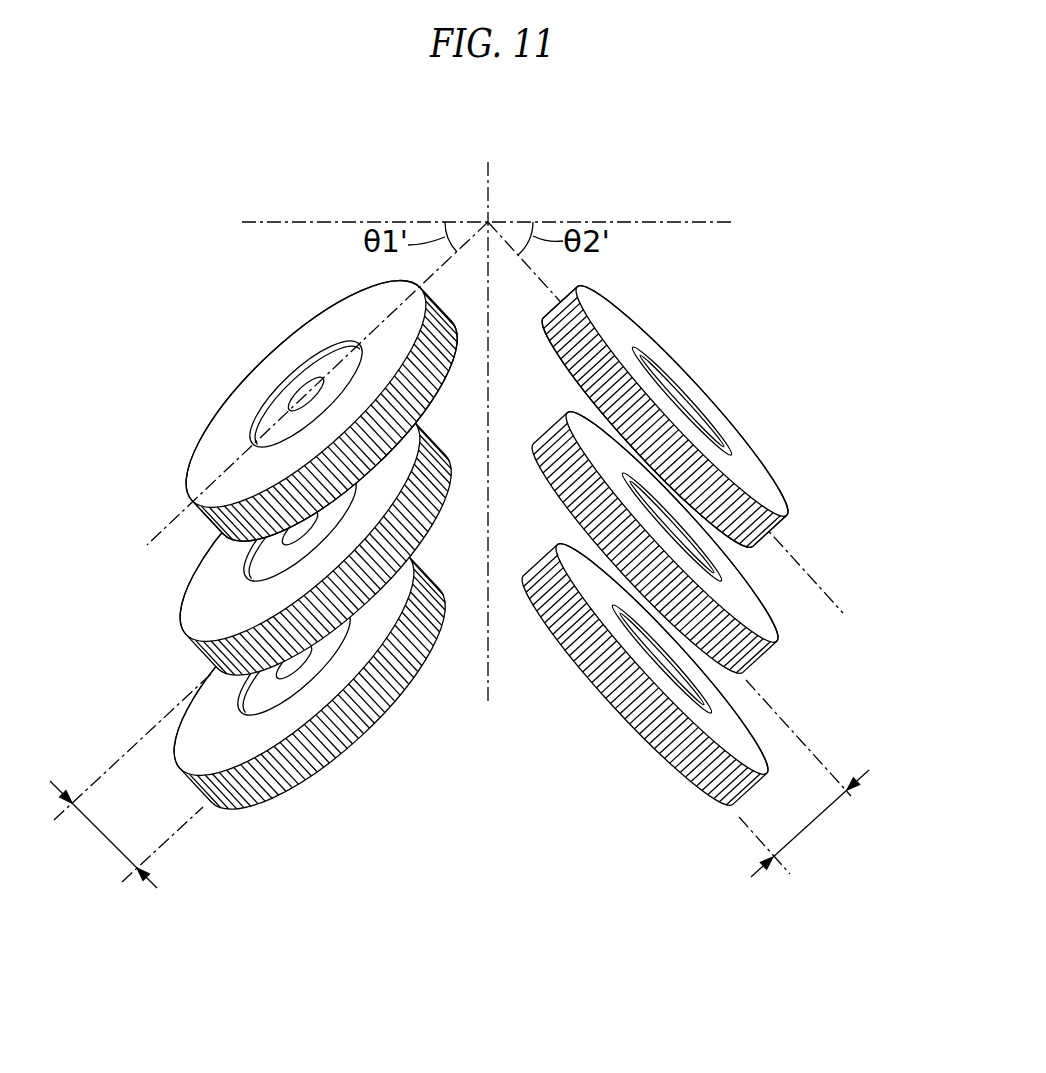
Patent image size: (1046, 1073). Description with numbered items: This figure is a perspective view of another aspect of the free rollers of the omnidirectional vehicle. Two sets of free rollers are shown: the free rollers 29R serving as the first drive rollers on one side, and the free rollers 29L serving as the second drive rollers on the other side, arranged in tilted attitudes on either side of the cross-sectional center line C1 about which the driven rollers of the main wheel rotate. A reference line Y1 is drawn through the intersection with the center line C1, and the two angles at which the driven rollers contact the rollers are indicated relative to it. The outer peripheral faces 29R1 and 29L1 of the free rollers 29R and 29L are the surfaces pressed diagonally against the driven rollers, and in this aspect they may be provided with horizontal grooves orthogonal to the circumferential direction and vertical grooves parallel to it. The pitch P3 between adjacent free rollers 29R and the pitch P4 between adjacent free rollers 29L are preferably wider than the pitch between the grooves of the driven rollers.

The free roller (first drive roller) 29R is at (315, 544).
The outer peripheral face of free roller 29R 29R1 is at (442, 327).
The free roller (second drive roller) 29L is at (655, 529).
The outer peripheral face of free roller 29L 29L1 is at (558, 297).
The cross-sectional center line C1 is at (488, 172).
The horizontal reference line Y1 is at (674, 221).
The pitch between adjacent free rollers 29R P3 is at (130, 781).
The pitch between adjacent free rollers 29L P4 is at (804, 778).